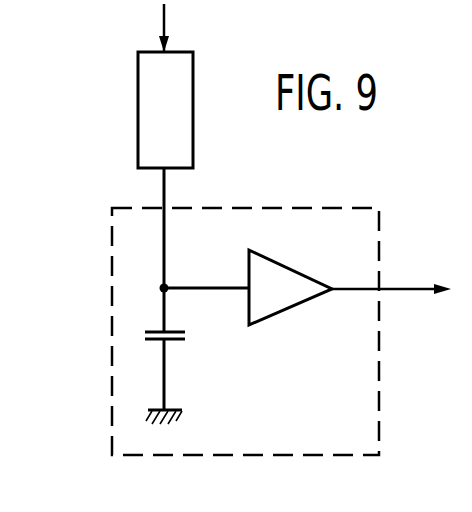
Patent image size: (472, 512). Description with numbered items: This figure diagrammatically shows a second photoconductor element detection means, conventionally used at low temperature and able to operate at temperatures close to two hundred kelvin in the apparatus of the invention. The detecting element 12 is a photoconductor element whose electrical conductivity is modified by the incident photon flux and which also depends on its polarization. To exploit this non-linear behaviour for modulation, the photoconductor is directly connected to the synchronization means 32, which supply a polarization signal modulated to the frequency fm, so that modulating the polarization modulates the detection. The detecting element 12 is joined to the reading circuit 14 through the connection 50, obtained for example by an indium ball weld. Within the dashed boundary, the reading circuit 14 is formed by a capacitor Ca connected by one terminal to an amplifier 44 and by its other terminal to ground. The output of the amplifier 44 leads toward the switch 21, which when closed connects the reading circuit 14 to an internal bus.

The synchronization means 32 is at (125, 28).
The detecting element 12 is at (146, 90).
The reading circuit 14 is at (112, 228).
The connection 50 is at (155, 288).
The capacitor Ca is at (172, 342).
The amplifier 44 is at (278, 303).
The switch 21 is at (391, 309).